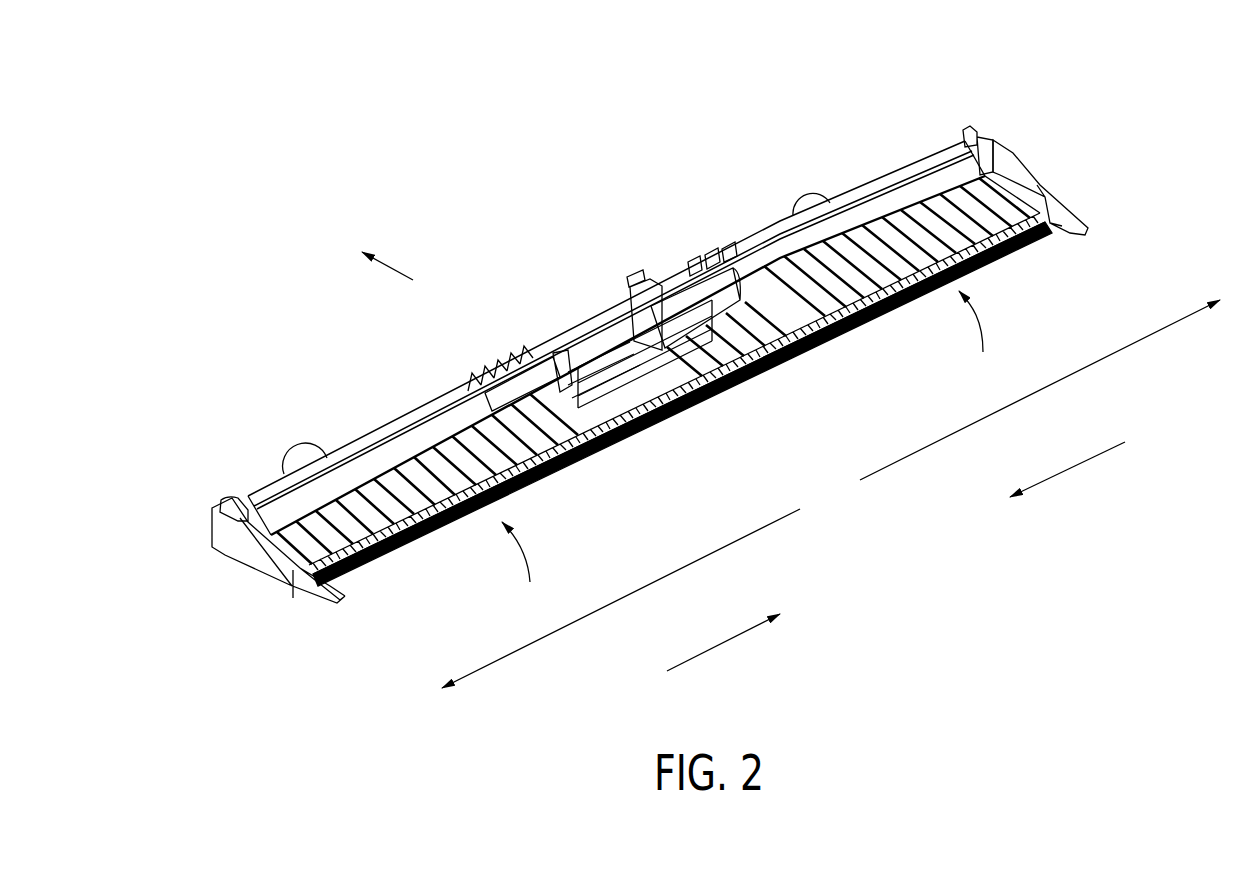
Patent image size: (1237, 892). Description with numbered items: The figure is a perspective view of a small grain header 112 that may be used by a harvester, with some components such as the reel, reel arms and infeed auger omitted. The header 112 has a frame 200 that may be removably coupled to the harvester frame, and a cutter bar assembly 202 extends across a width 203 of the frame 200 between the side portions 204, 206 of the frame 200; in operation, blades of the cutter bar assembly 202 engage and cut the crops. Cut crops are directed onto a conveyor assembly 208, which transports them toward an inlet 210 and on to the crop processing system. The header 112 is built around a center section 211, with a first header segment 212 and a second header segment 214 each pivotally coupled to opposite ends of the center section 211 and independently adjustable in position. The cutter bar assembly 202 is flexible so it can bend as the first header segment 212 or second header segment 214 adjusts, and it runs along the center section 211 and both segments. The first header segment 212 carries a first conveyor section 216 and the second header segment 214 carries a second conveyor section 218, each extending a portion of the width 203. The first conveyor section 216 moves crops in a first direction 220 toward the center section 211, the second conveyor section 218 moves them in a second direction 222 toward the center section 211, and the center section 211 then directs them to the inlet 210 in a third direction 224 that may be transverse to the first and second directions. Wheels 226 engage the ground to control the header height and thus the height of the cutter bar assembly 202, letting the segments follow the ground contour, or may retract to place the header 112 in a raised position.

The header 112 is at (1140, 150).
The frame 200 is at (760, 231).
The cutter bar assembly 202 is at (545, 477).
The width 203 is at (831, 494).
The side portion 204 is at (1018, 162).
The side portion 206 is at (280, 573).
The conveyor assembly 208 is at (752, 366).
The inlet 210 is at (595, 362).
The center section 211 is at (648, 375).
The first header segment 212 is at (526, 567).
The second header segment 214 is at (982, 338).
The first conveyor section 216 is at (423, 499).
The second conveyor section 218 is at (846, 289).
The first direction 220 is at (714, 639).
The second direction 222 is at (1073, 467).
The third direction 224 is at (398, 270).
The wheels 226 is at (813, 196).